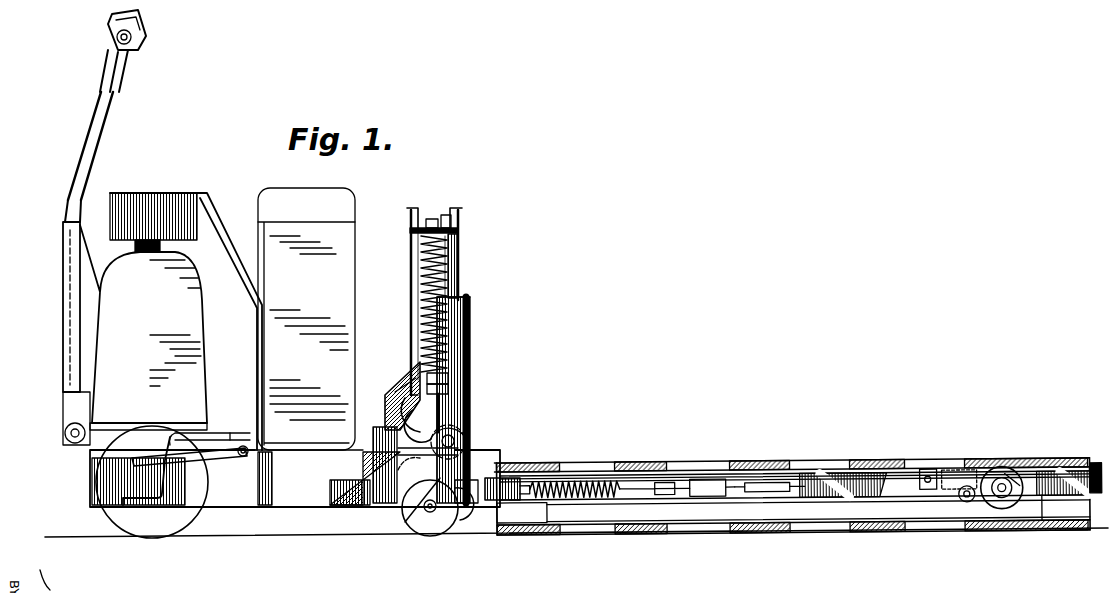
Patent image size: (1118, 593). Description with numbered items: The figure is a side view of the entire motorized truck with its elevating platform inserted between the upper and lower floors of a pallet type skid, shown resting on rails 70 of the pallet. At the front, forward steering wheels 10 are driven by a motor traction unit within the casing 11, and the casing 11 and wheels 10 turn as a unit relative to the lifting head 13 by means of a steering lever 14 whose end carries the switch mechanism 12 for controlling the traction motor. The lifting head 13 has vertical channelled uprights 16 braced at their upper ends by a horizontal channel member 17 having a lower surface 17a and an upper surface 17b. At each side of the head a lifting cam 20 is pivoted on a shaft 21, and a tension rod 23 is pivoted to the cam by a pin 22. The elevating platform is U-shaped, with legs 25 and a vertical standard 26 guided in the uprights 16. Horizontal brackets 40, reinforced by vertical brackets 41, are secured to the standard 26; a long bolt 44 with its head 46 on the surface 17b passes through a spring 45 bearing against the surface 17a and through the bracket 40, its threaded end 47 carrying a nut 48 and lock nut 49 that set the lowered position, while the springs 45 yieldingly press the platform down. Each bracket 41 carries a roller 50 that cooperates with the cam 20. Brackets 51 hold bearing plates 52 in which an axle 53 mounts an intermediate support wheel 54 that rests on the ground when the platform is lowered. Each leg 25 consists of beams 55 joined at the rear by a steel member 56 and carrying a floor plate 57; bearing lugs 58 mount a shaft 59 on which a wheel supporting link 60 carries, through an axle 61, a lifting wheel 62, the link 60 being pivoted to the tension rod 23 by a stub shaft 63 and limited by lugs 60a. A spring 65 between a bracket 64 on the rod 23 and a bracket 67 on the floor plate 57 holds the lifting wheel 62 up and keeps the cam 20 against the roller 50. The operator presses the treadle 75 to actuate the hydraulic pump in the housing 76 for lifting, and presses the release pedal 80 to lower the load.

The forward steering wheels 10 is at (186, 538).
The casing 11 is at (152, 383).
The switch mechanism 12 is at (108, 30).
The lifting head 13 is at (302, 475).
The steering lever 14 is at (63, 316).
The vertical channelled uprights 16 is at (412, 289).
The horizontal channel member 17 is at (460, 213).
The lower surface of beam 17a is at (460, 233).
The upper surface of beam 17b is at (450, 212).
The lifting cam 20 is at (392, 405).
The shaft 21 is at (466, 436).
The pin 22 is at (462, 505).
The tension rod 23 is at (516, 478).
The legs 25 is at (858, 470).
The vertical standard 26 is at (471, 326).
The horizontal brackets 40 is at (412, 372).
The vertical brackets 41 is at (410, 385).
The long bolt 44 is at (450, 262).
The spring 45 is at (451, 249).
The bolt head 46 is at (431, 218).
The threaded lower end 47 is at (441, 410).
The nut 48 is at (449, 378).
The lock nut 49 is at (449, 390).
The roller 50 is at (395, 498).
The brackets 51 is at (462, 428).
The bearing plates 52 is at (405, 530).
The axle 53 is at (454, 535).
The intermediate support wheel 54 is at (425, 537).
The horizontally extending beams 55 is at (830, 470).
The steel member 56 is at (1096, 467).
The floor plate 57 is at (736, 472).
The bearing lugs 58 is at (925, 472).
The shaft 59 is at (952, 472).
The wheel supporting link 60 is at (990, 512).
The lugs 60a is at (995, 472).
The axle 61 is at (1010, 478).
The lifting wheel 62 is at (1005, 514).
The stub shaft 63 is at (962, 507).
The bracket 64 is at (522, 513).
The spring 65 is at (605, 501).
The bracket 67 is at (642, 502).
The rail 70 is at (1042, 470).
The treadle 75 is at (152, 537).
The housing 76 is at (234, 485).
The release pedal 80 is at (130, 525).